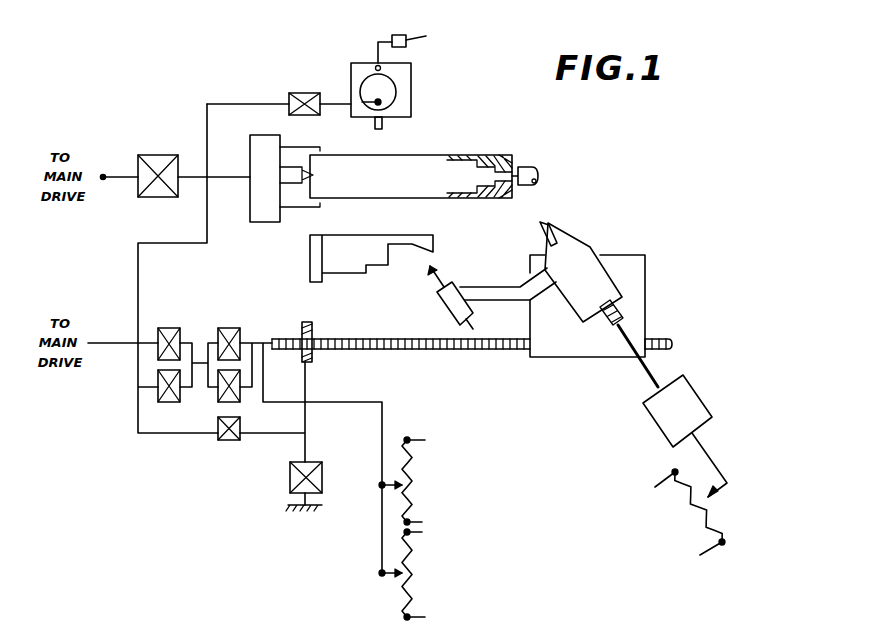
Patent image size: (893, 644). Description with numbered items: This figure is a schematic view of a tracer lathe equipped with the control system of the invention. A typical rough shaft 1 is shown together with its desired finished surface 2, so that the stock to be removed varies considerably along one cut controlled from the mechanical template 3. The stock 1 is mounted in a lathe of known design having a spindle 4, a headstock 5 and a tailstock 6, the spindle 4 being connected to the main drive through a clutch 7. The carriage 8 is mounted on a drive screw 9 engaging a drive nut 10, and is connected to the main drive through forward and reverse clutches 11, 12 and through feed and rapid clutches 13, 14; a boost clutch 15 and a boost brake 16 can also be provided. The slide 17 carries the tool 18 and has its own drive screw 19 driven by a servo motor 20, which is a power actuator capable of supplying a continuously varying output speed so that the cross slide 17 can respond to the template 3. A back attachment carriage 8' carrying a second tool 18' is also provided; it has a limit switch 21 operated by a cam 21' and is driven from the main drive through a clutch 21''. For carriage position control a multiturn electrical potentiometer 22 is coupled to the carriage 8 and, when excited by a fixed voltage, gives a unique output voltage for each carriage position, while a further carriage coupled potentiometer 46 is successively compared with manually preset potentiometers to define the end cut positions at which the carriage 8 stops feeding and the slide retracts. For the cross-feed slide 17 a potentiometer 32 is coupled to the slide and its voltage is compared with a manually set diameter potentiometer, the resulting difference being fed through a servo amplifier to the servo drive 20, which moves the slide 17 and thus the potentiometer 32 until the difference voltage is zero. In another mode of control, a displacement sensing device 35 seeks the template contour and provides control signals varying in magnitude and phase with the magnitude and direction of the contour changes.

The rough shaft 1 is at (431, 155).
The desired finished surface 2 is at (496, 155).
The mechanical template 3 is at (376, 236).
The spindle 4 is at (263, 208).
The headstock 5 is at (296, 167).
The tailstock 6 is at (530, 167).
The clutch 7 is at (158, 155).
The carriage 8 is at (595, 292).
The back attachment carriage 8' is at (399, 90).
The drive screw 9 is at (455, 350).
The drive nut 10 is at (310, 322).
The forward clutch 11 is at (238, 312).
The reverse clutch 12 is at (224, 402).
The feed clutch 13 is at (175, 314).
The rapid clutch 14 is at (169, 402).
The boost clutch 15 is at (240, 428).
The boost brake 16 is at (290, 483).
The slide 17 is at (590, 249).
The tool 18 is at (526, 233).
The tool 18' is at (356, 134).
The drive screw 19 is at (605, 320).
The servo motor 20 is at (687, 395).
The limit switch 21 is at (422, 38).
The cam 21' is at (353, 74).
The clutch 21'' is at (279, 88).
The multiturn electrical potentiometer 22 is at (408, 470).
The potentiometer 32 is at (710, 513).
The displacement sensing device 35 is at (445, 306).
The carriage coupled potentiometer 46 is at (410, 555).